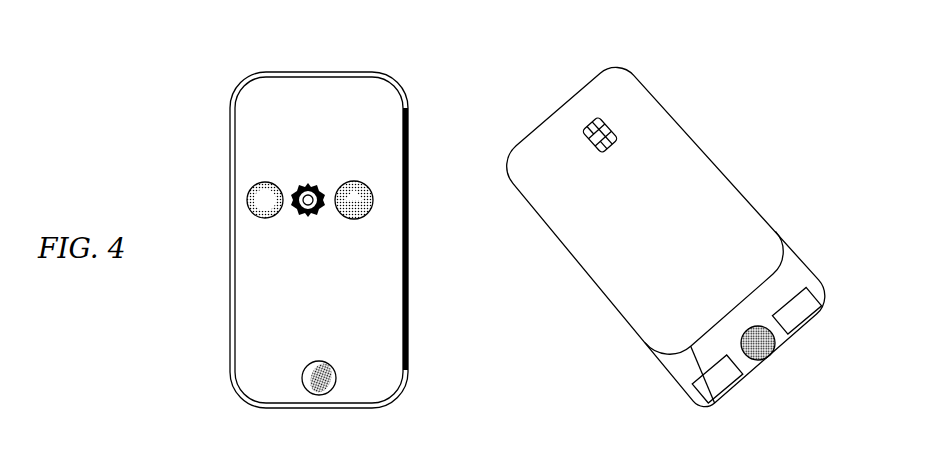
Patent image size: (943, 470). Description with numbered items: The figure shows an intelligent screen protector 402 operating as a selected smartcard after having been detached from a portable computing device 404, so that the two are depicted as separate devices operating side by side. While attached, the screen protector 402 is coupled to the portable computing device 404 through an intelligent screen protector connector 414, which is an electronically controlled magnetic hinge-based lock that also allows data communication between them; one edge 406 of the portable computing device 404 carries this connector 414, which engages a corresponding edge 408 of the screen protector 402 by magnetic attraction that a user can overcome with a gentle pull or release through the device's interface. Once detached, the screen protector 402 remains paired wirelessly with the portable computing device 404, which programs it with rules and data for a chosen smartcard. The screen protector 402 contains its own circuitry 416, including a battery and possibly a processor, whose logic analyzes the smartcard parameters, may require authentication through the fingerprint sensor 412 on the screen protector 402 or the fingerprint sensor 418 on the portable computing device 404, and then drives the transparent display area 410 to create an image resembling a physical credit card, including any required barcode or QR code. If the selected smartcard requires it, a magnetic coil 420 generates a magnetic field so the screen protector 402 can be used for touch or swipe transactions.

The intelligent screen protector 402 is at (570, 100).
The portable computing device 404 is at (292, 72).
The edge 406 is at (408, 108).
The edge 408 is at (541, 222).
The transparent display area 410 is at (677, 362).
The fingerprint sensor 412 is at (777, 347).
The intelligent screen protector connector 414 is at (408, 137).
The circuitry 416 is at (712, 385).
The fingerprint sensor 418 is at (322, 395).
The magnetic coil 420 is at (817, 297).